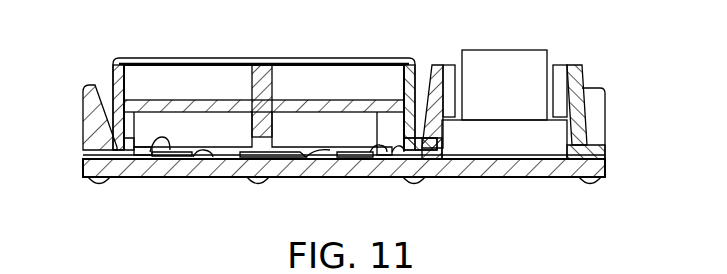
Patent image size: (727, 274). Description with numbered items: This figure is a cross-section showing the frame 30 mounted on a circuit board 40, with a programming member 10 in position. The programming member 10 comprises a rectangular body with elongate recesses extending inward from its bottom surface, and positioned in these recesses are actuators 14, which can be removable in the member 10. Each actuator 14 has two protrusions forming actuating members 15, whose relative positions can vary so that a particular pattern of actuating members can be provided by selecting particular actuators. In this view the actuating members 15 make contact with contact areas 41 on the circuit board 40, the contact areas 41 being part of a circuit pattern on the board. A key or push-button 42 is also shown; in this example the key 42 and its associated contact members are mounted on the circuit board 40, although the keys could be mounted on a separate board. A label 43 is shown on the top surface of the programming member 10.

The programming member 10 is at (113, 62).
The actuator 14 is at (328, 135).
The actuating member 15 is at (178, 156).
The frame 30 is at (589, 71).
The circuit board 40 is at (158, 162).
The contact area 41 is at (152, 158).
The key 42 is at (488, 62).
The label 43 is at (212, 58).